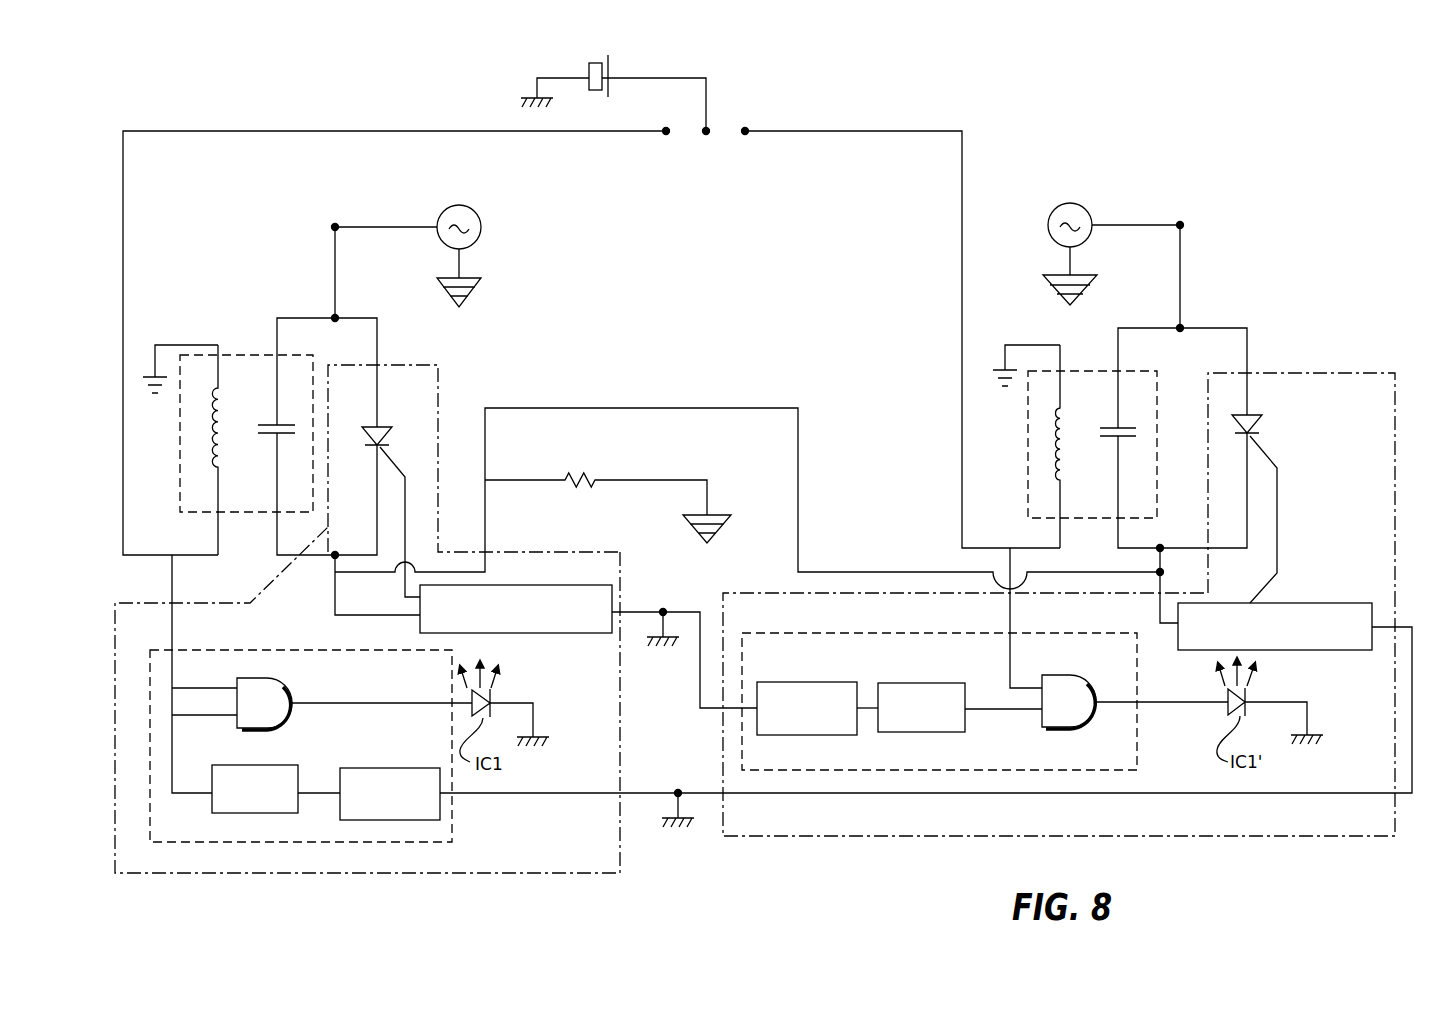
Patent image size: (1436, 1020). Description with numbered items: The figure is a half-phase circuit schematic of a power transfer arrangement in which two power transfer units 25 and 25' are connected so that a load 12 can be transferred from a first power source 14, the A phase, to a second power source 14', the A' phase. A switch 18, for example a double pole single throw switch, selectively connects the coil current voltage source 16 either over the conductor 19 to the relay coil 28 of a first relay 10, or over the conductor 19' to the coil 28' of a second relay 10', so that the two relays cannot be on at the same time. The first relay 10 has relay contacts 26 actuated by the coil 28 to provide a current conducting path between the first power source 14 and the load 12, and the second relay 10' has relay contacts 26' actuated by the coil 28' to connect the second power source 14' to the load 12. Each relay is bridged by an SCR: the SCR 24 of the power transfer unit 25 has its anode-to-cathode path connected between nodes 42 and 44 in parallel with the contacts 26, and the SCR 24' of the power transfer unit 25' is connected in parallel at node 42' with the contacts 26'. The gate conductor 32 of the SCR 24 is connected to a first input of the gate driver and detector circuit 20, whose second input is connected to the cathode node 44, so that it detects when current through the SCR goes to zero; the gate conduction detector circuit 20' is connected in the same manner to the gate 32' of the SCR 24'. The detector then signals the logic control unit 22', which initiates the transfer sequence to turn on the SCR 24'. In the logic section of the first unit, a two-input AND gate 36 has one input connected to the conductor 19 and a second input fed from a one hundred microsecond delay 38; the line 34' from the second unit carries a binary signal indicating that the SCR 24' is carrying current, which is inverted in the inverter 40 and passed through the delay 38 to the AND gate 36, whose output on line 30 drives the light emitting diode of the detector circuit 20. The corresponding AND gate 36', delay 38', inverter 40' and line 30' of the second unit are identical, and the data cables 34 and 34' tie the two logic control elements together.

The first relay 10 is at (228, 409).
The load 12 is at (590, 479).
The first power source 14 is at (424, 247).
The coil current voltage source 16 is at (590, 66).
The switch 18 is at (706, 100).
The conductor 19 is at (394, 325).
The gate driver and detector circuit 20 is at (516, 598).
The SCR 24 is at (394, 418).
The power transfer unit 25 is at (474, 442).
The relay contacts 26 is at (264, 408).
The relay coil 28 is at (244, 450).
The output line 30 is at (420, 703).
The gate conductor 32 is at (427, 522).
The data cable 34 is at (667, 609).
The AND gate 36 is at (249, 674).
The delay 38 is at (278, 776).
The inverter 40 is at (390, 777).
The node 42 is at (329, 391).
The node 44 is at (336, 553).
The second power source 14' is at (1121, 237).
The conductor 19' is at (901, 324).
The gate conduction detector circuit 20' is at (1275, 608).
The logic control unit 22' is at (966, 701).
The SCR 24' is at (1267, 407).
The power transfer unit 25' is at (1301, 466).
The relay contacts 26' is at (1104, 413).
The relay coil 28' is at (1084, 446).
The output line 30' is at (1209, 701).
The gate conductor 32' is at (1290, 519).
The data cable 34' is at (682, 792).
The AND gate 36' is at (1063, 638).
The delay 38' is at (932, 693).
The inverter 40' is at (809, 690).
The node 42' is at (1182, 386).
The second relay 10' is at (1075, 416).